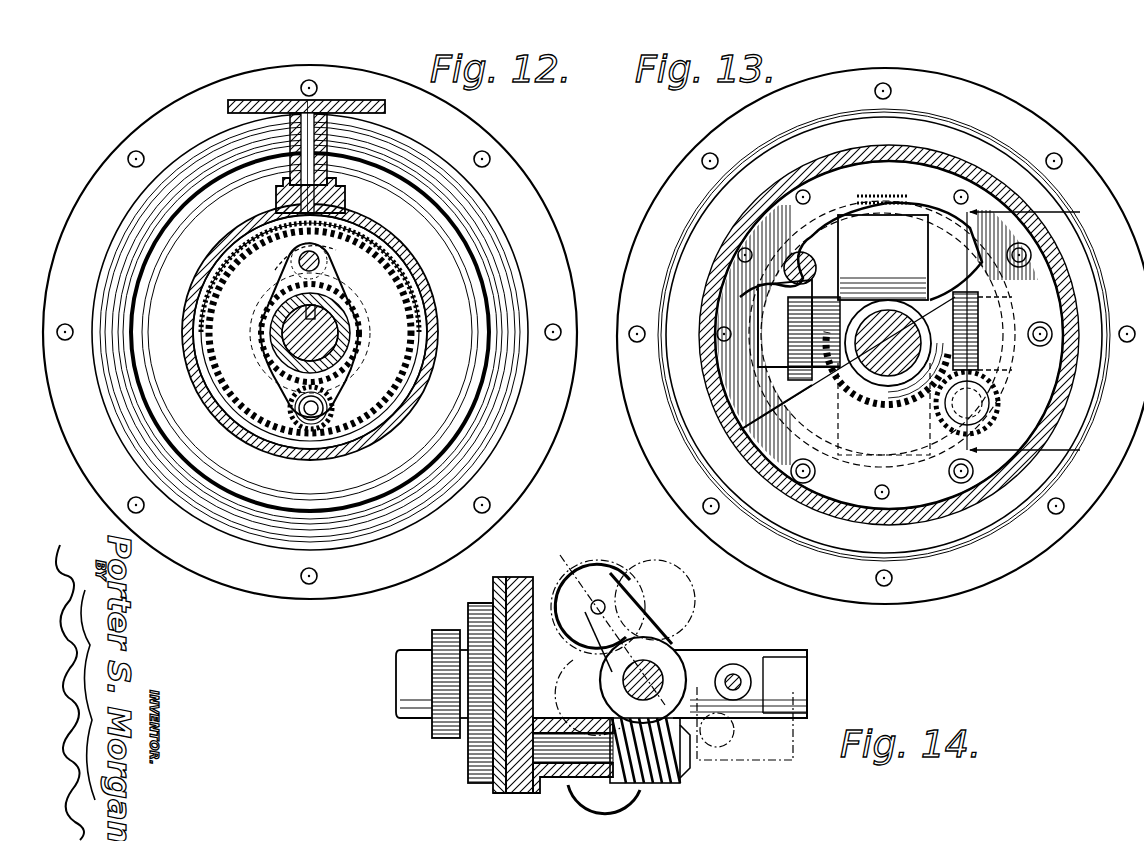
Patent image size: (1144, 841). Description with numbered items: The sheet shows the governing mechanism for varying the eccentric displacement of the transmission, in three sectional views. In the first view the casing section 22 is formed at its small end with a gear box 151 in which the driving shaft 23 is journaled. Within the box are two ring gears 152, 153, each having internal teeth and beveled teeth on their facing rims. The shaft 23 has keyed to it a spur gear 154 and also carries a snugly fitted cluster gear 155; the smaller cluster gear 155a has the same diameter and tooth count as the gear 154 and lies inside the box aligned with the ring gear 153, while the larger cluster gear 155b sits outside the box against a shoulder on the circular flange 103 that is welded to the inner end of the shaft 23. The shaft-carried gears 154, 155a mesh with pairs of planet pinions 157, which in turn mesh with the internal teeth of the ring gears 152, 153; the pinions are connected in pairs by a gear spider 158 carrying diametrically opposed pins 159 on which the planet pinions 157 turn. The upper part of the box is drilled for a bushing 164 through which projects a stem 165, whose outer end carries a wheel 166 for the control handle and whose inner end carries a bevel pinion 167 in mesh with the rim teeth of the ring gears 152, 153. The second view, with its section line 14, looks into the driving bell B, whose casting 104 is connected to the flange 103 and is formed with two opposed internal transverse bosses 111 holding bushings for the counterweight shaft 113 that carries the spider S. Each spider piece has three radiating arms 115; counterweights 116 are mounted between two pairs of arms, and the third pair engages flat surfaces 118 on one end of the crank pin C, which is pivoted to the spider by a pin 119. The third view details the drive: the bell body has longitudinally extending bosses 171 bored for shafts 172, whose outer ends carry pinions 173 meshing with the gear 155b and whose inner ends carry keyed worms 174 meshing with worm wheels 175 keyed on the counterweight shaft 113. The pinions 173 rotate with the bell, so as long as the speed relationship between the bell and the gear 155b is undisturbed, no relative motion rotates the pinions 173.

In FIG. 12, the casing section 22 is at (185, 331).
In FIG. 12, the driving shaft 23 is at (305, 336).
In FIG. 13, the driving shaft 23 is at (896, 335).
In FIG. 12, the gear box 151 is at (190, 293).
In FIG. 12, the ring gear 152 is at (218, 270).
In FIG. 12, the ring gear 153 is at (238, 250).
In FIG. 12, the spur gear 154 is at (270, 320).
In FIG. 12, the smaller cluster gear 155a is at (285, 306).
In FIG. 14, the smaller cluster gear 155a is at (447, 740).
In FIG. 14, the cluster gear 155 is at (462, 632).
In FIG. 14, the larger cluster gear 155b is at (482, 605).
In FIG. 12, the planet pinion 157 is at (330, 252).
In FIG. 12, the gear spider 158 is at (346, 290).
In FIG. 12, the pin 159 is at (300, 264).
In FIG. 12, the bushing 164 is at (300, 172).
In FIG. 12, the stem 165 is at (300, 146).
In FIG. 12, the wheel 166 is at (250, 100).
In FIG. 12, the bevel pinion 167 is at (278, 208).
In FIG. 13, the circular flange 103 is at (787, 407).
In FIG. 14, the circular flange 103 is at (499, 577).
In FIG. 13, the casting 104 is at (866, 170).
In FIG. 14, the casting 104 is at (525, 585).
In FIG. 13, the driving bell B is at (884, 331).
In FIG. 13, the spider S is at (862, 315).
In FIG. 14, the spider S is at (660, 630).
In FIG. 13, the internal transverse boss 111 is at (885, 325).
In FIG. 13, the worm wheel 175 is at (790, 349).
In FIG. 14, the worm wheel 175 is at (686, 752).
In FIG. 13, the counterweight 116 is at (887, 325).
In FIG. 14, the counterweight 116 is at (598, 600).
In FIG. 13, the pinion 173 is at (990, 412).
In FIG. 14, the pinion 173 is at (482, 785).
In FIG. 13, the section line 14 is at (1041, 332).
In FIG. 14, the counterweight shaft 113 is at (623, 680).
In FIG. 14, the radiating arm 115 is at (725, 672).
In FIG. 14, the flat surface 118 is at (768, 672).
In FIG. 14, the pin 119 is at (736, 678).
In FIG. 14, the longitudinally extending boss 171 is at (565, 777).
In FIG. 14, the shaft 172 is at (527, 793).
In FIG. 14, the worm 174 is at (668, 785).
In FIG. 14, the crank pin C is at (795, 745).